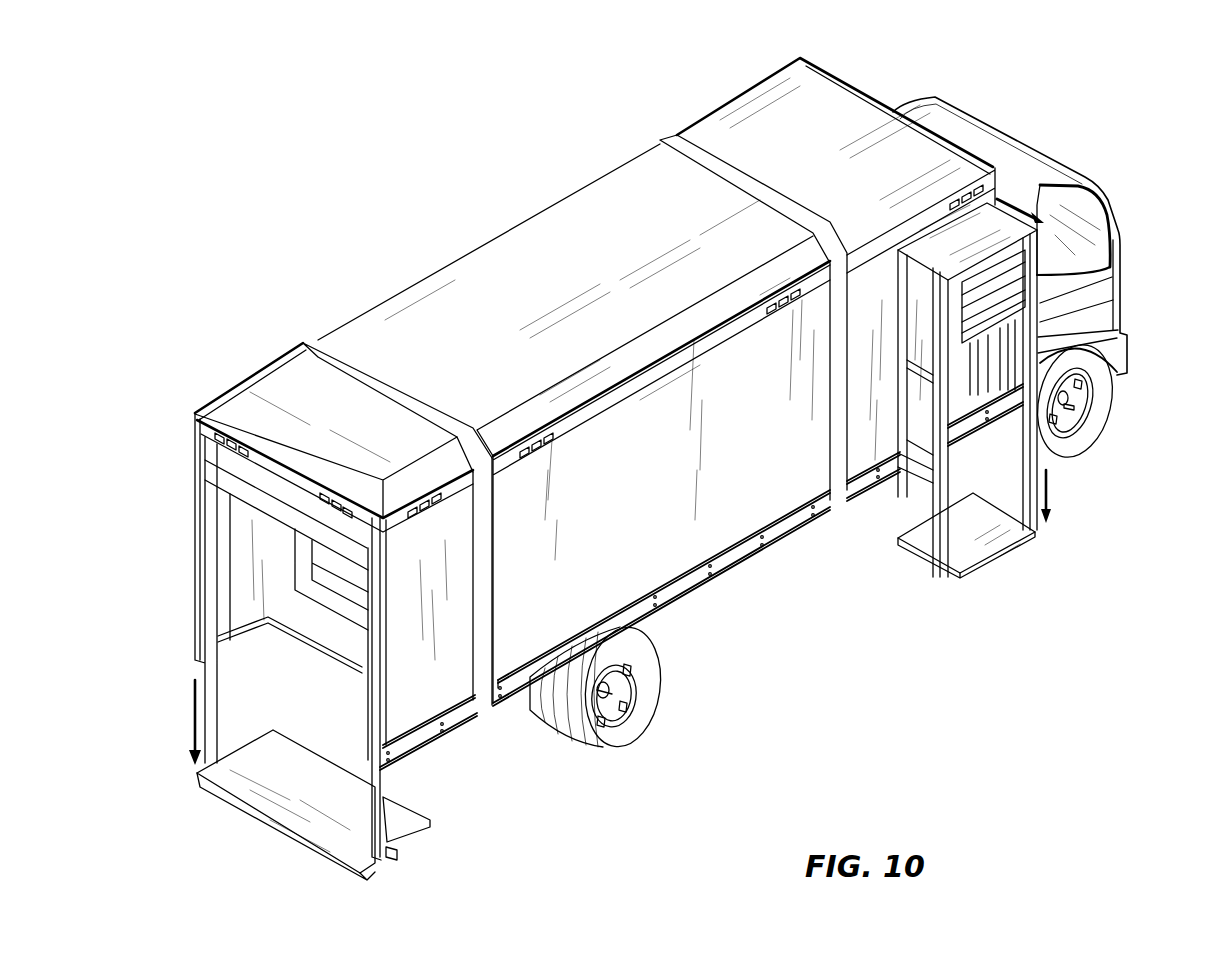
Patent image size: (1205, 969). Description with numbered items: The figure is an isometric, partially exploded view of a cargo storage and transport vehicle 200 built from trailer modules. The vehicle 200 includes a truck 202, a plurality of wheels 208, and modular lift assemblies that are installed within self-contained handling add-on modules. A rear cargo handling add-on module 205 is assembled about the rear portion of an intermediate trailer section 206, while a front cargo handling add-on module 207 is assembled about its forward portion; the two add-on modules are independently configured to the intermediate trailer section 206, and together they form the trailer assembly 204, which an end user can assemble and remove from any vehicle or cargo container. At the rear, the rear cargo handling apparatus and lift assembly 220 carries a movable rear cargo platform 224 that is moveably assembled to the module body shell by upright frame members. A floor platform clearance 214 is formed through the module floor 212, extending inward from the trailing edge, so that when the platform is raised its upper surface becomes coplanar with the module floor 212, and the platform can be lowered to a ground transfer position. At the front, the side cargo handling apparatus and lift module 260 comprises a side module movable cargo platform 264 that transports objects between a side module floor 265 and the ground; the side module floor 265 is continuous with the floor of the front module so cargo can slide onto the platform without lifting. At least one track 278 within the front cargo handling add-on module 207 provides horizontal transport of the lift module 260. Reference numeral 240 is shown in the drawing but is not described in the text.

The cargo storage and transport vehicle 200 is at (1076, 108).
The truck 202 is at (1045, 172).
The trailer assembly 204 is at (337, 192).
The rear cargo handling add-on module 205 is at (321, 402).
The intermediate trailer section 206 is at (550, 270).
The front cargo handling add-on module 207 is at (790, 133).
The wheels 208 is at (633, 717).
The module floor 212 is at (352, 584).
The floor platform clearance 214 is at (358, 648).
The rear cargo handling apparatus and lift assembly 220 is at (257, 830).
The movable rear cargo platform 224 is at (400, 808).
The foot 240 is at (393, 855).
The side cargo handling apparatus and lift module 260 is at (1013, 555).
The side module movable cargo platform 264 is at (990, 522).
The side module floor 265 is at (910, 428).
The track 278 is at (912, 365).